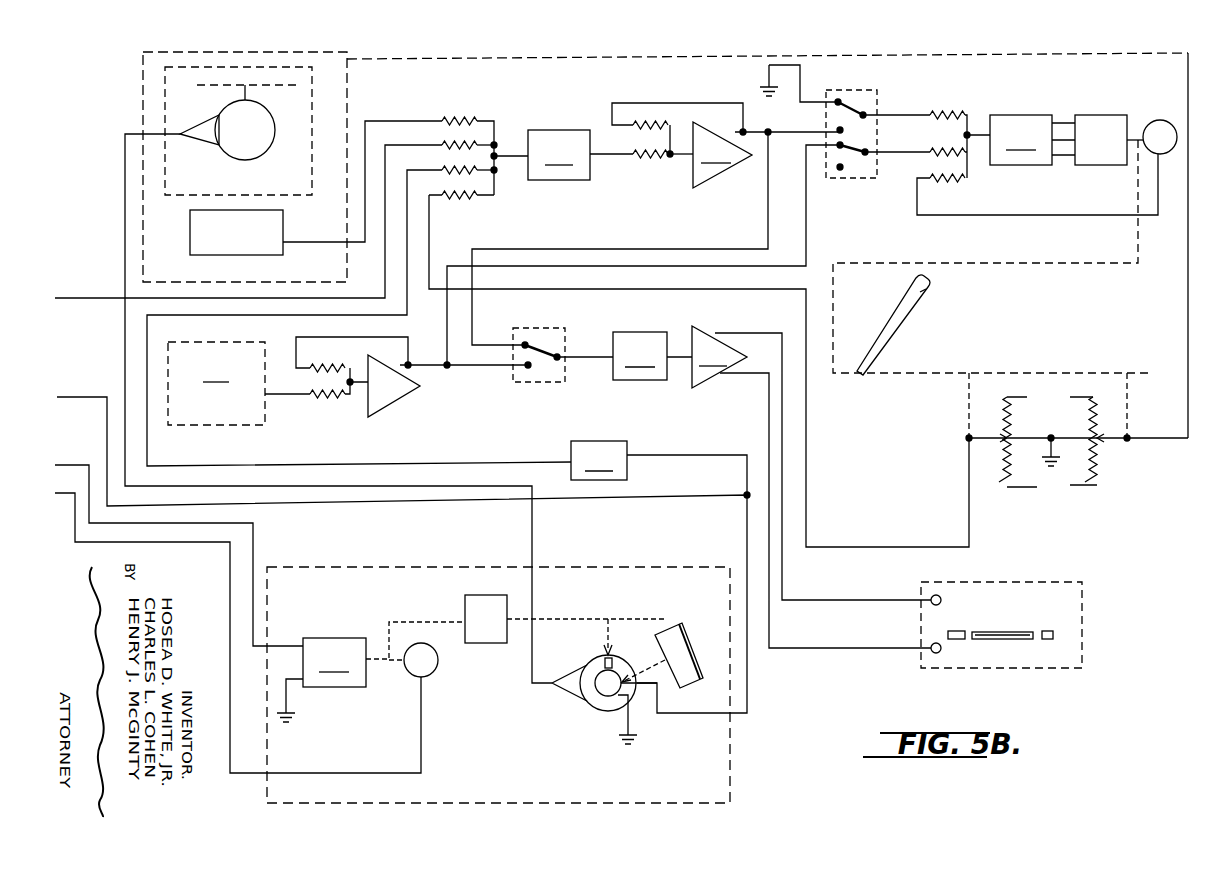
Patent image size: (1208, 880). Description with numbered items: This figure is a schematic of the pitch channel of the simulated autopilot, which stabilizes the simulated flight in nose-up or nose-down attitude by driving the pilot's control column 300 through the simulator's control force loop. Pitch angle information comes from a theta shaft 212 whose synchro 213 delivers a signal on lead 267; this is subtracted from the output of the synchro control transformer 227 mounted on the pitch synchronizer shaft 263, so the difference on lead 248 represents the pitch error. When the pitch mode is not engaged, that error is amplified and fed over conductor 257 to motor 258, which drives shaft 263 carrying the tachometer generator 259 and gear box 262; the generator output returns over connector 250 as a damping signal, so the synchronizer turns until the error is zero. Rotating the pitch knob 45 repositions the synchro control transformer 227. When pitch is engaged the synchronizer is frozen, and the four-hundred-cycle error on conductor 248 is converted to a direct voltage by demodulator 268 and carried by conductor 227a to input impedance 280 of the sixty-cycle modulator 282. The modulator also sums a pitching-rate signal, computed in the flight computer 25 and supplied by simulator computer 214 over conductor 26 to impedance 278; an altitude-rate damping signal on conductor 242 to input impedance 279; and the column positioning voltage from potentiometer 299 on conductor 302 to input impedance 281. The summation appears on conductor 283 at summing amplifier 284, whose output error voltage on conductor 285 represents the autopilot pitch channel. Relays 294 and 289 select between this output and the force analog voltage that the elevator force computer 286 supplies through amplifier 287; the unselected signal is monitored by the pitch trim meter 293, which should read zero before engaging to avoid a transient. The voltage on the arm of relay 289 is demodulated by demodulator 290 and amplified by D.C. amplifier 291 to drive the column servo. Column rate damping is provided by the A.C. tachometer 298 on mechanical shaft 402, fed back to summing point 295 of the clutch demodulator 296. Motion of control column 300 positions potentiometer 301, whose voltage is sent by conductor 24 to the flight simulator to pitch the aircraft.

The conductor 24 is at (1186, 312).
The flight computer 25 is at (349, 110).
The conductor 26 is at (411, 121).
The pitch knob 45 is at (690, 626).
The theta shaft 212 is at (314, 186).
The synchro 213 is at (265, 148).
The simulator computer 214 is at (236, 232).
The synchro control transformer 227 is at (600, 712).
The conductor 227a is at (257, 466).
The conductor 242 is at (110, 298).
The lead 248 is at (92, 397).
The connector 250 is at (70, 493).
The conductor 257 is at (89, 465).
The motor 258 is at (371, 672).
The tachometer generator 259 is at (438, 660).
The gear box 262 is at (465, 611).
The pitch synchronizer shaft 263 is at (560, 619).
The lead 267 is at (125, 234).
The four-hundred-cycle demodulator 268 is at (659, 468).
The impedance 278 is at (471, 118).
The input impedance 279 is at (446, 143).
The input impedance 280 is at (446, 170).
The input impedance 281 is at (465, 199).
The sixty-cycle modulator 282 is at (562, 155).
The conductor 283 is at (620, 158).
The summing amplifier 284 is at (726, 145).
The conductor 285 is at (766, 213).
The elevator force computer 286 is at (268, 383).
The amplifier 287 is at (415, 388).
The relay 289 is at (557, 330).
The demodulator 290 is at (652, 356).
The D.C. amplifier 291 is at (811, 487).
The pitch trim meter 293 is at (1085, 620).
The relay 294 is at (880, 104).
The summing point 295 is at (968, 132).
The clutch demodulator 296 is at (1058, 140).
The A.C. tachometer 298 is at (1160, 120).
The potentiometer 299 is at (1005, 482).
The control column 300 is at (908, 323).
The potentiometer 301 is at (1100, 450).
The conductor 302 is at (830, 547).
The mechanical shaft 402 is at (1014, 372).